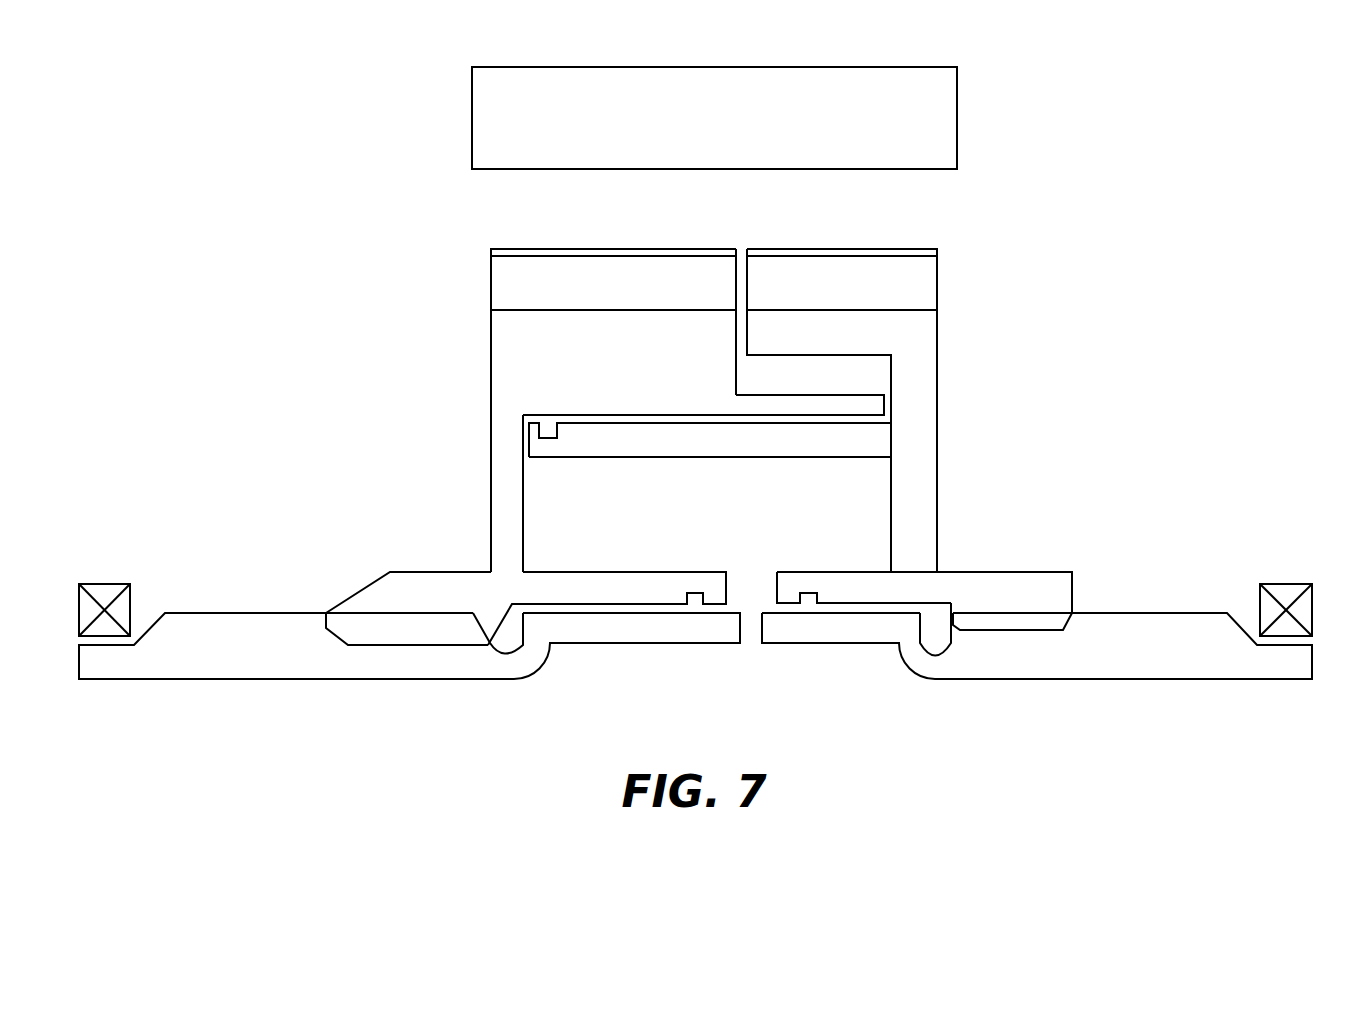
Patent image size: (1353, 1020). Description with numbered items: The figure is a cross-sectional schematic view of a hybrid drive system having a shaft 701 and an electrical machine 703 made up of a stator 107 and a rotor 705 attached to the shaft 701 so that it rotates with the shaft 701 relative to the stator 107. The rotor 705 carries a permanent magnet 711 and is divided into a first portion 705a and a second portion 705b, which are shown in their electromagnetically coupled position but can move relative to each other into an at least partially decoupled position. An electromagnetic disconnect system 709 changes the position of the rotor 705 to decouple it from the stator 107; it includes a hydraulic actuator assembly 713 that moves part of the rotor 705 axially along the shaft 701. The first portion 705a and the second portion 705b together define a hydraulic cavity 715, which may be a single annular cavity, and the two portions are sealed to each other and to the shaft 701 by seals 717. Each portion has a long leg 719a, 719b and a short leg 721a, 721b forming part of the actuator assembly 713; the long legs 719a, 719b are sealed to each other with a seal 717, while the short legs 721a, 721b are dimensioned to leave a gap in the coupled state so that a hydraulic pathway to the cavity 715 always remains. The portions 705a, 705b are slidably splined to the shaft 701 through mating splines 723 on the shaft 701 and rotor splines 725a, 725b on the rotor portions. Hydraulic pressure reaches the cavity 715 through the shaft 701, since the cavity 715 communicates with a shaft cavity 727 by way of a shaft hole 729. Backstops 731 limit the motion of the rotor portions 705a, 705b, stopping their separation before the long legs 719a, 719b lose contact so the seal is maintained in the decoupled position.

The stator 107 is at (738, 131).
The shaft 701 is at (1153, 632).
The electrical machine 703 is at (416, 147).
The rotor 705 is at (978, 274).
The first portion 705a is at (525, 348).
The second portion 705b is at (913, 353).
The electromagnetic disconnect system 709 is at (998, 478).
The permanent magnet 711 is at (535, 280).
The hydraulic actuator assembly 713 is at (900, 446).
The hydraulic cavity 715 is at (712, 518).
The seal 717 is at (538, 430).
The long leg 719a is at (608, 435).
The long leg 719b is at (797, 404).
The short leg 721a is at (555, 587).
The short leg 721b is at (848, 585).
The mating spline 723 is at (423, 615).
The rotor spline 725a is at (466, 648).
The rotor spline 725b is at (1003, 630).
The shaft cavity 727 is at (805, 663).
The shaft hole 729 is at (748, 630).
The backstop 731 is at (103, 597).